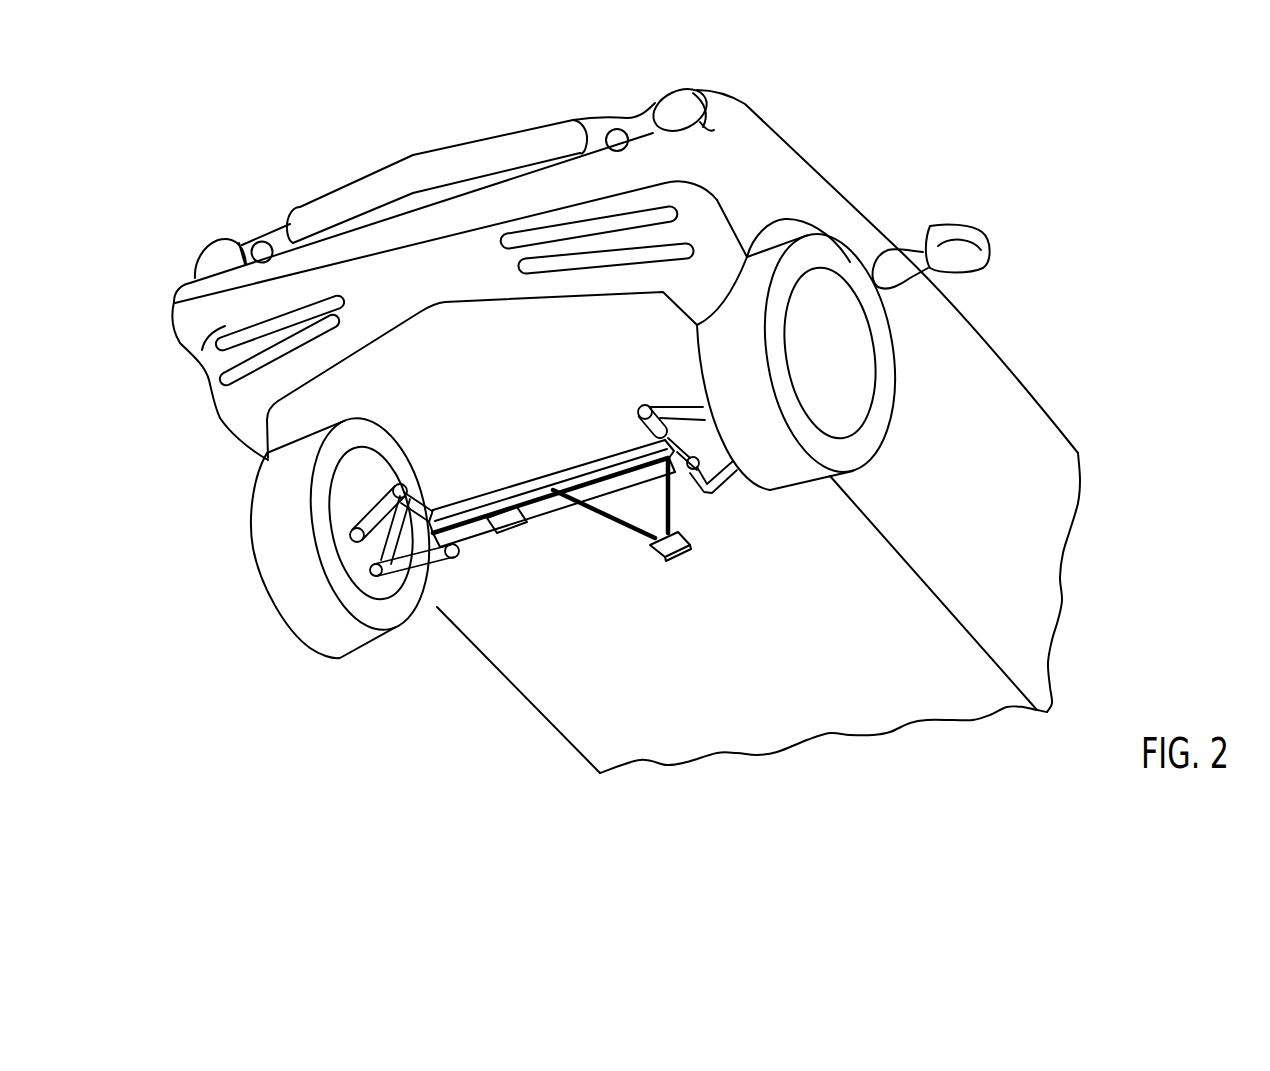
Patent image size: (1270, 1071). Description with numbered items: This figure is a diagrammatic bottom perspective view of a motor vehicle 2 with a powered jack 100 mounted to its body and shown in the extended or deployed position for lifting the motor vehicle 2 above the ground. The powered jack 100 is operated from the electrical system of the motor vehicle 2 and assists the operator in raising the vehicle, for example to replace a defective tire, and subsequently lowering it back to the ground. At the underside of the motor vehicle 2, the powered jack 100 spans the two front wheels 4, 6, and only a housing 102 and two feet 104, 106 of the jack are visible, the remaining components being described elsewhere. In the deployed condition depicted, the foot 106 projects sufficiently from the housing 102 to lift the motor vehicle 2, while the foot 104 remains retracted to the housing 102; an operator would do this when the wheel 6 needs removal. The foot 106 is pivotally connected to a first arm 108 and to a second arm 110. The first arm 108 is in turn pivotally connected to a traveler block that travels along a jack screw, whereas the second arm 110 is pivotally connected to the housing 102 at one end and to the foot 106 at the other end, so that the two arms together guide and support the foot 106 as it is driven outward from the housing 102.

The motor vehicle 2 is at (1001, 98).
The front wheel 4 is at (273, 612).
The front wheel 6 is at (822, 478).
The powered jack 100 is at (543, 476).
The housing 102 is at (517, 490).
The foot 104 is at (520, 533).
The foot 106 is at (672, 553).
The first arm 108 is at (620, 532).
The second arm 110 is at (672, 506).